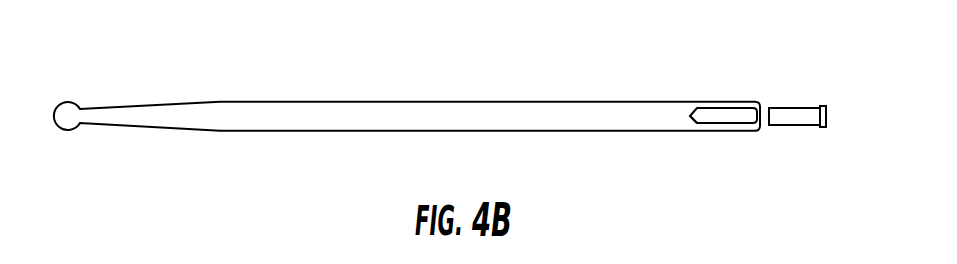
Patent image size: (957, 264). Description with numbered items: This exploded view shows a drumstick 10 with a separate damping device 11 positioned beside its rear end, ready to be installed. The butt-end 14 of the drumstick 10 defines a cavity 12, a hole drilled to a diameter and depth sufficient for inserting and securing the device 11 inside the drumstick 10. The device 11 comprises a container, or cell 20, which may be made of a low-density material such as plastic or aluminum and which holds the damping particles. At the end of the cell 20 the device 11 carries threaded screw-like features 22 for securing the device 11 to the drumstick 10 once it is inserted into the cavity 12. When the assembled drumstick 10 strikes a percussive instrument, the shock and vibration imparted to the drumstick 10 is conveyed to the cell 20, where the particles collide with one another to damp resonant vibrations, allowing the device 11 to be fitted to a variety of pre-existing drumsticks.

The drumstick 10 is at (550, 108).
The device 11 is at (840, 101).
The cavity 12 is at (727, 113).
The butt-end 14 is at (690, 132).
The cell 20 is at (795, 113).
The threaded screw-like features 22 is at (815, 127).